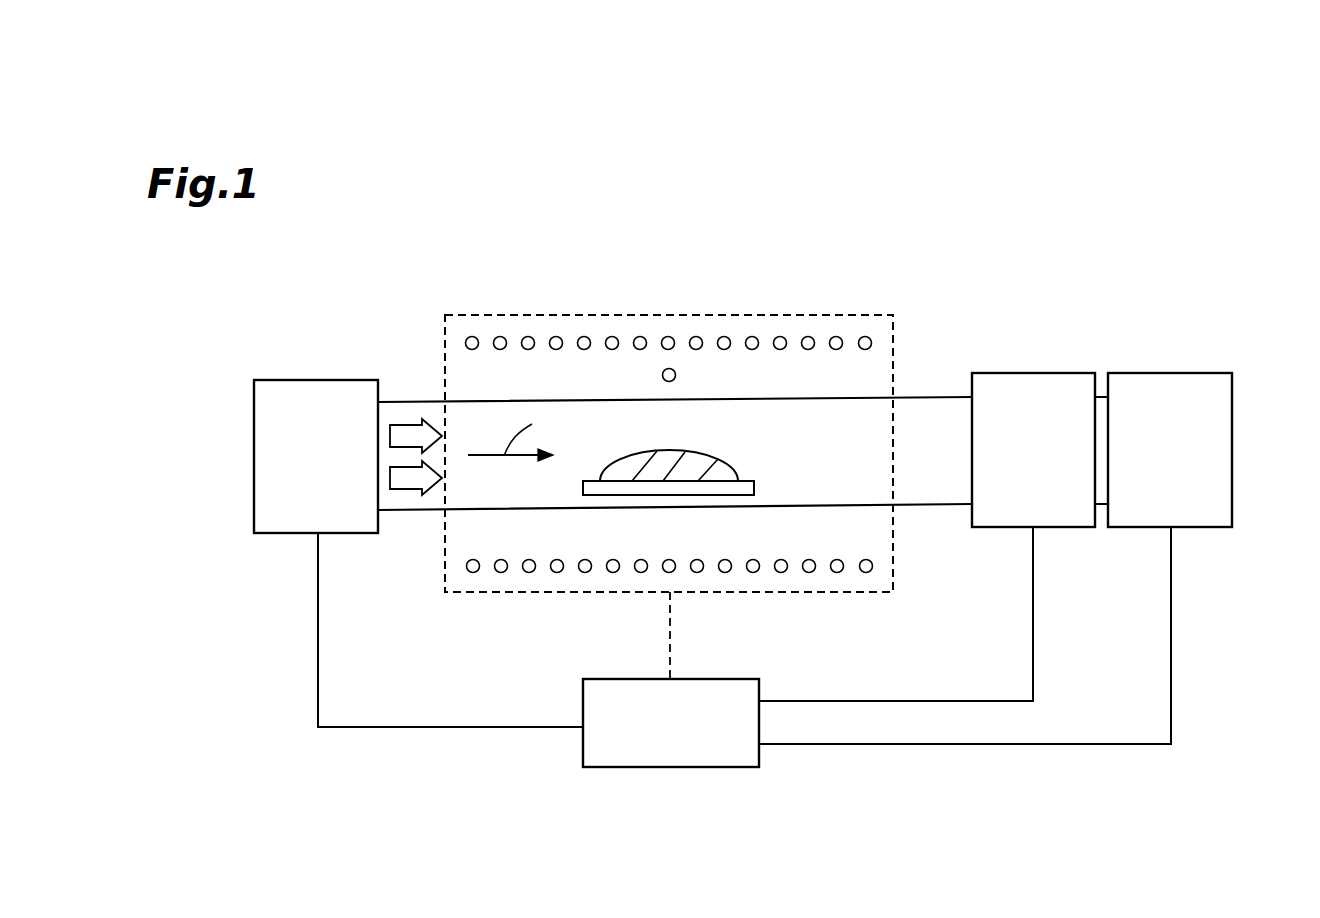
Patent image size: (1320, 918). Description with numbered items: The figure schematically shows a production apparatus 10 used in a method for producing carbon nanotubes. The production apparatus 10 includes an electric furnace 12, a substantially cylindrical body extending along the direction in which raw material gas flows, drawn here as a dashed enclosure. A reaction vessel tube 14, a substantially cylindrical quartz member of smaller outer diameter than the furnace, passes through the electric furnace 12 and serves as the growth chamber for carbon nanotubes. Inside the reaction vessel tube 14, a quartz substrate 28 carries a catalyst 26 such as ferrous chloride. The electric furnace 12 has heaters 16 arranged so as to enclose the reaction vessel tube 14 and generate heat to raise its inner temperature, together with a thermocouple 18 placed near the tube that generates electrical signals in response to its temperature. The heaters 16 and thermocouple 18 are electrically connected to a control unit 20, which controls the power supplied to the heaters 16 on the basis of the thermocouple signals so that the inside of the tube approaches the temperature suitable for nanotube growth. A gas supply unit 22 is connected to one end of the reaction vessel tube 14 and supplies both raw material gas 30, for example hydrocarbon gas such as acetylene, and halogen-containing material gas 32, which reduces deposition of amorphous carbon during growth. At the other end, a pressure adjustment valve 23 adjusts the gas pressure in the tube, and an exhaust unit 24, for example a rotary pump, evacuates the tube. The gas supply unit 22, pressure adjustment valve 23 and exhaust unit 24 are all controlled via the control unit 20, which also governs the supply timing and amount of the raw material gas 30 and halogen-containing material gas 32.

The production apparatus 10 is at (846, 246).
The electric furnace 12 is at (827, 315).
The reaction vessel tube 14 is at (932, 397).
The heaters 16 is at (640, 336).
The thermocouple 18 is at (676, 375).
The control unit 20 is at (693, 679).
The gas supply unit 22 is at (318, 380).
The pressure adjustment valve 23 is at (1033, 373).
The exhaust unit 24 is at (1172, 373).
The catalyst 26 is at (690, 462).
The substrate 28 is at (754, 488).
The raw material gas 30 is at (410, 419).
The halogen-containing material gas 32 is at (410, 491).